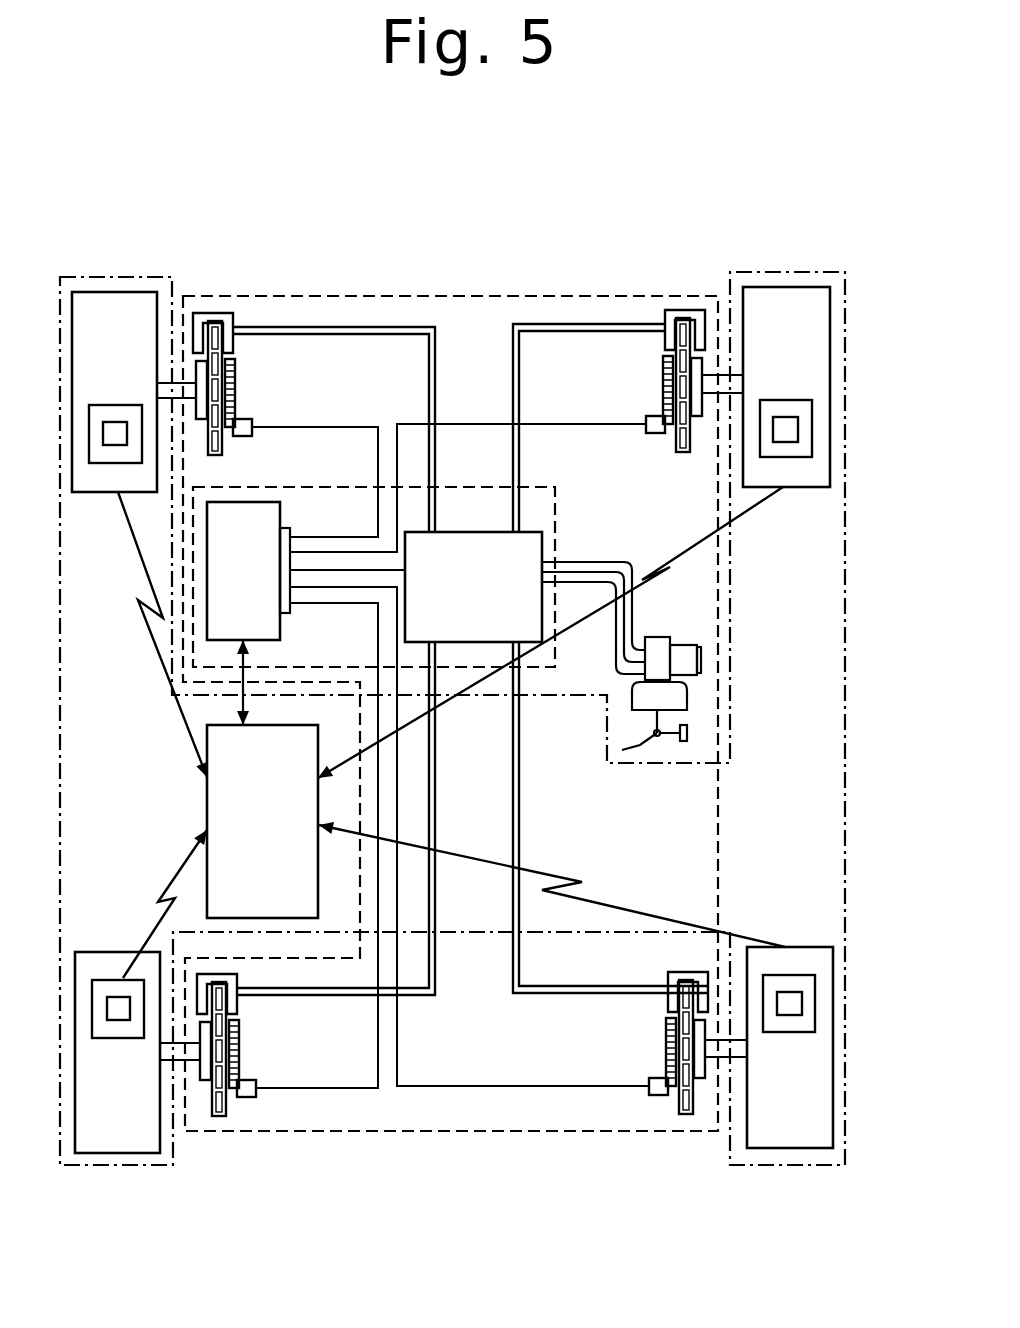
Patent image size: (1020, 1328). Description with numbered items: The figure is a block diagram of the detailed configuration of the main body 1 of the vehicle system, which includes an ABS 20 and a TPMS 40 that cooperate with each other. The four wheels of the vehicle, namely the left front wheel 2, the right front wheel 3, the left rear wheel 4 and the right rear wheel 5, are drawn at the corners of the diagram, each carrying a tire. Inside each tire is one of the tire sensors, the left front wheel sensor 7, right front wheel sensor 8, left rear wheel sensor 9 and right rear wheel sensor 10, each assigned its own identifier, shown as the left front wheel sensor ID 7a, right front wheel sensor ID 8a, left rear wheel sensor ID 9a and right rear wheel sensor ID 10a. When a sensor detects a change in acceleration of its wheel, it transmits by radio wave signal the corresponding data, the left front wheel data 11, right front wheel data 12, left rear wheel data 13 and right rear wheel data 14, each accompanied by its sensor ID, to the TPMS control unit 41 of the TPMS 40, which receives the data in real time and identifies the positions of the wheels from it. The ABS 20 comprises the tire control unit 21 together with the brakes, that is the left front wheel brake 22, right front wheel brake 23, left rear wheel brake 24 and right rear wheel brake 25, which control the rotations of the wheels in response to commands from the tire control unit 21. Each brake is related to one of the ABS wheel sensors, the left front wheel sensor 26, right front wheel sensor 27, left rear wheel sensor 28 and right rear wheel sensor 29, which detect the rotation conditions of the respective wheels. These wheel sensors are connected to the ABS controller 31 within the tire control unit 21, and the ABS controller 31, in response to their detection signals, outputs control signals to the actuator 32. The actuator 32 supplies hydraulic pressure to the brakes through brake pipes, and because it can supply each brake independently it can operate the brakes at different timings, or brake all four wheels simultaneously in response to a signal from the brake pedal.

The main body 1 is at (612, 228).
The left front wheel 2 is at (118, 292).
The right front wheel 3 is at (830, 385).
The left rear wheel 4 is at (120, 1153).
The right rear wheel 5 is at (833, 1045).
The left front wheel sensor 7 is at (89, 440).
The left front wheel sensor ID 7a is at (119, 422).
The right front wheel sensor 8 is at (812, 437).
The right front wheel sensor ID 8a is at (785, 417).
The left rear wheel sensor 9 is at (92, 1000).
The left rear wheel sensor ID 9a is at (118, 1020).
The right rear wheel sensor 10 is at (815, 1000).
The right rear wheel sensor ID 10a is at (787, 1015).
The left front wheel data 11 is at (162, 660).
The right front wheel data 12 is at (748, 508).
The left rear wheel data 13 is at (157, 922).
The right rear wheel data 14 is at (550, 872).
The ABS 20 is at (472, 296).
The tire control unit 21 is at (462, 487).
The left front wheel brake 22 is at (252, 388).
The right front wheel brake 23 is at (650, 383).
The left rear wheel brake 24 is at (255, 1047).
The right rear wheel brake 25 is at (650, 1045).
The left front wheel sensor 26 is at (243, 436).
The right front wheel sensor 27 is at (655, 436).
The left rear wheel sensor 28 is at (245, 1097).
The right rear wheel sensor 29 is at (660, 1095).
The ABS controller 31 is at (282, 502).
The actuator 32 is at (542, 532).
The TPMS 40 is at (845, 730).
The TPMS control unit 41 is at (207, 822).